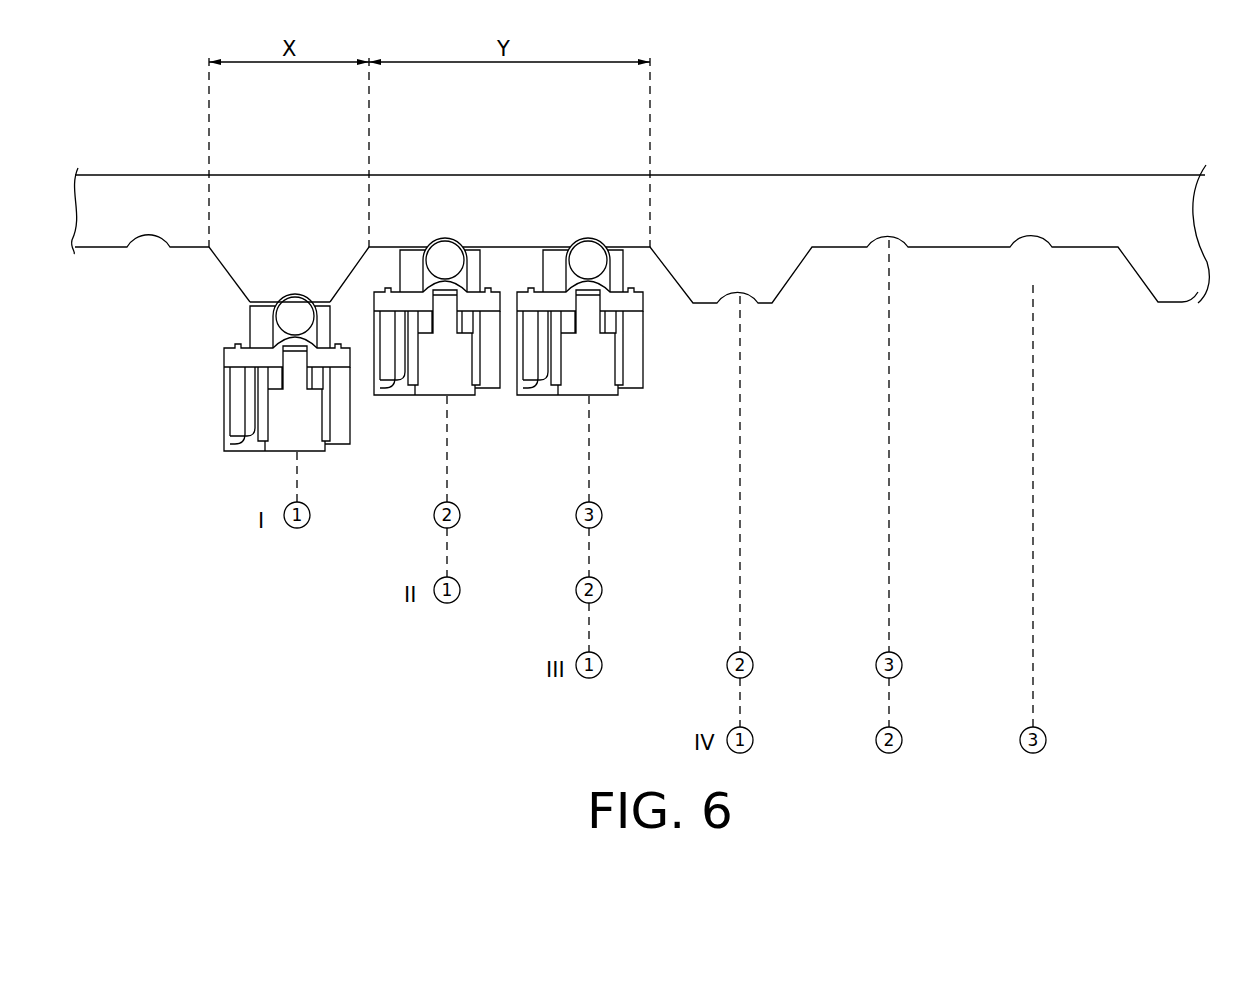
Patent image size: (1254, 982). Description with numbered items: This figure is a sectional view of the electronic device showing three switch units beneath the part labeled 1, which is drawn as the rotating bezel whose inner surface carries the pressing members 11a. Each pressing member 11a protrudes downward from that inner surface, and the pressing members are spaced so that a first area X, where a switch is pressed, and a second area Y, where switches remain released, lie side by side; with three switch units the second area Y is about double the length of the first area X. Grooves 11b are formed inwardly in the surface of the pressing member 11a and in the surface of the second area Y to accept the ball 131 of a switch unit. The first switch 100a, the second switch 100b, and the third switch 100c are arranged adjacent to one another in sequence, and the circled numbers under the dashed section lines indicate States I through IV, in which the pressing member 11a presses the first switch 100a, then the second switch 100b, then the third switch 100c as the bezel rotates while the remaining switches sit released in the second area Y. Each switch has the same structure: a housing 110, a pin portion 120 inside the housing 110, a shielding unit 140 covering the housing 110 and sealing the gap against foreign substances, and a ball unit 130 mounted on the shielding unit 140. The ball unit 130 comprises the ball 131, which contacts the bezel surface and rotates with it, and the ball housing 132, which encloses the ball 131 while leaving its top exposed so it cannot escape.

The frame 1 is at (663, 203).
The pressing member 11a is at (232, 274).
The groove 11b is at (293, 291).
The first switch 100a is at (239, 372).
The second switch 100b is at (411, 420).
The third switch 100c is at (548, 420).
The housing 110 is at (287, 398).
The pin portion 120 is at (212, 417).
The ball unit 130 is at (290, 321).
The ball 131 is at (295, 316).
The ball housing 132 is at (290, 321).
The shielding unit 140 is at (287, 352).